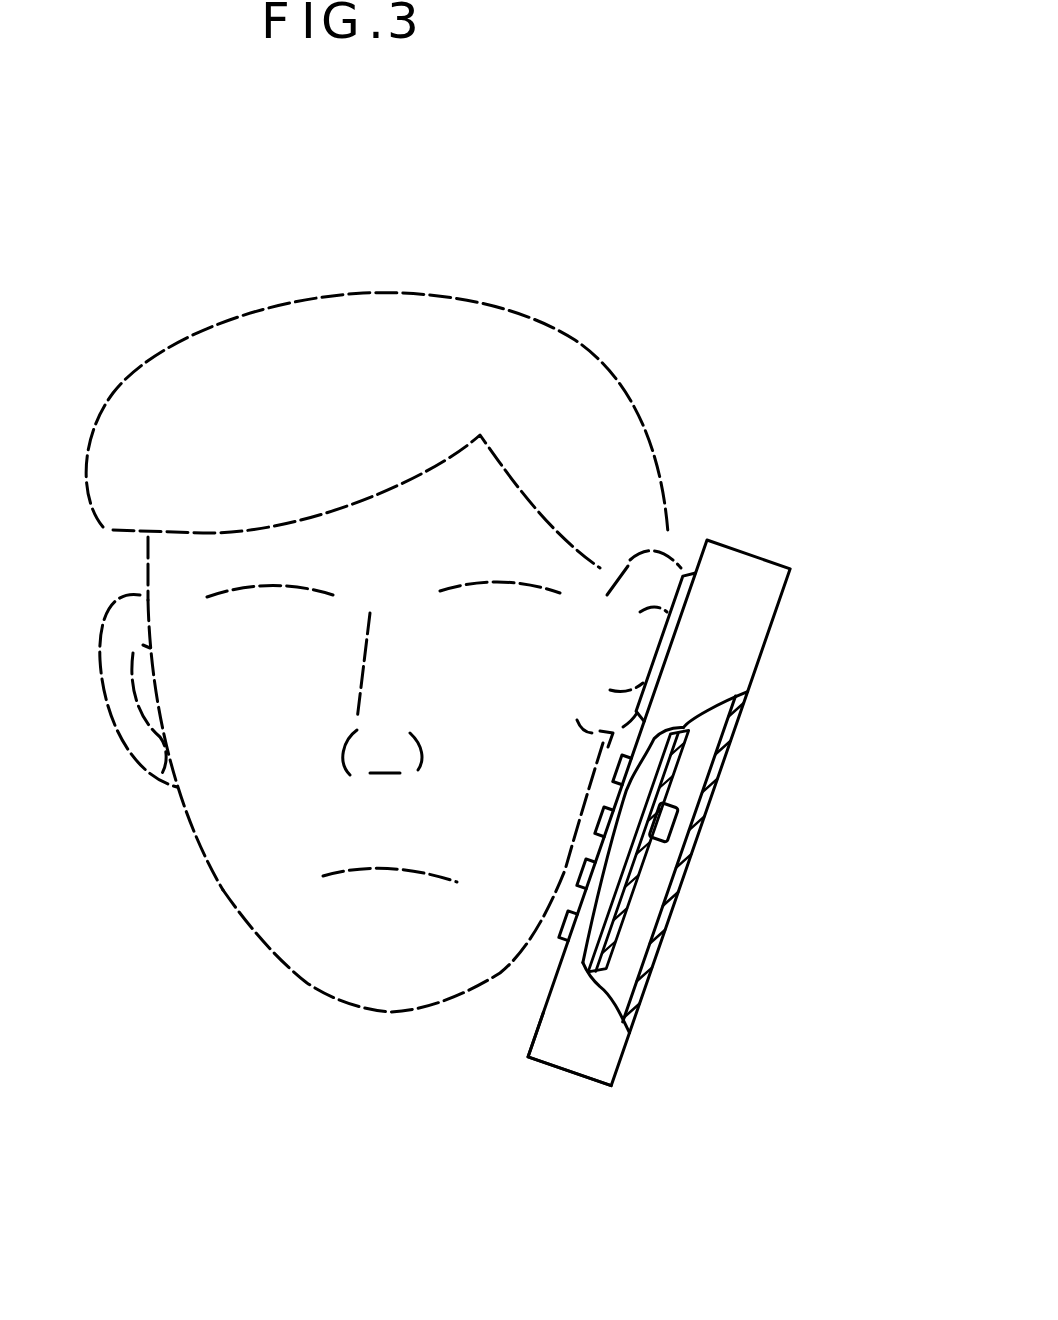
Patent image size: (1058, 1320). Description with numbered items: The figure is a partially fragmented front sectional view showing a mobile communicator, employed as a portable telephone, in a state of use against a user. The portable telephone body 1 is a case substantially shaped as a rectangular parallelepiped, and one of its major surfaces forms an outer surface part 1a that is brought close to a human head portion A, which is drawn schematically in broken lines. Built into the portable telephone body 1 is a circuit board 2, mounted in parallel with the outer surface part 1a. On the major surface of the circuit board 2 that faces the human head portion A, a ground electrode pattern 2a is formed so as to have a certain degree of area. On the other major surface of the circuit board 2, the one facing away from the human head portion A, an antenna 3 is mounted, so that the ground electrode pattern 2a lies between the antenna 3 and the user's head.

The human head portion A is at (223, 890).
The portable telephone body 1 is at (762, 552).
The outer surface part 1a is at (537, 1027).
The circuit board 2 is at (677, 760).
The ground electrode pattern 2a is at (595, 955).
The antenna 3 is at (680, 818).